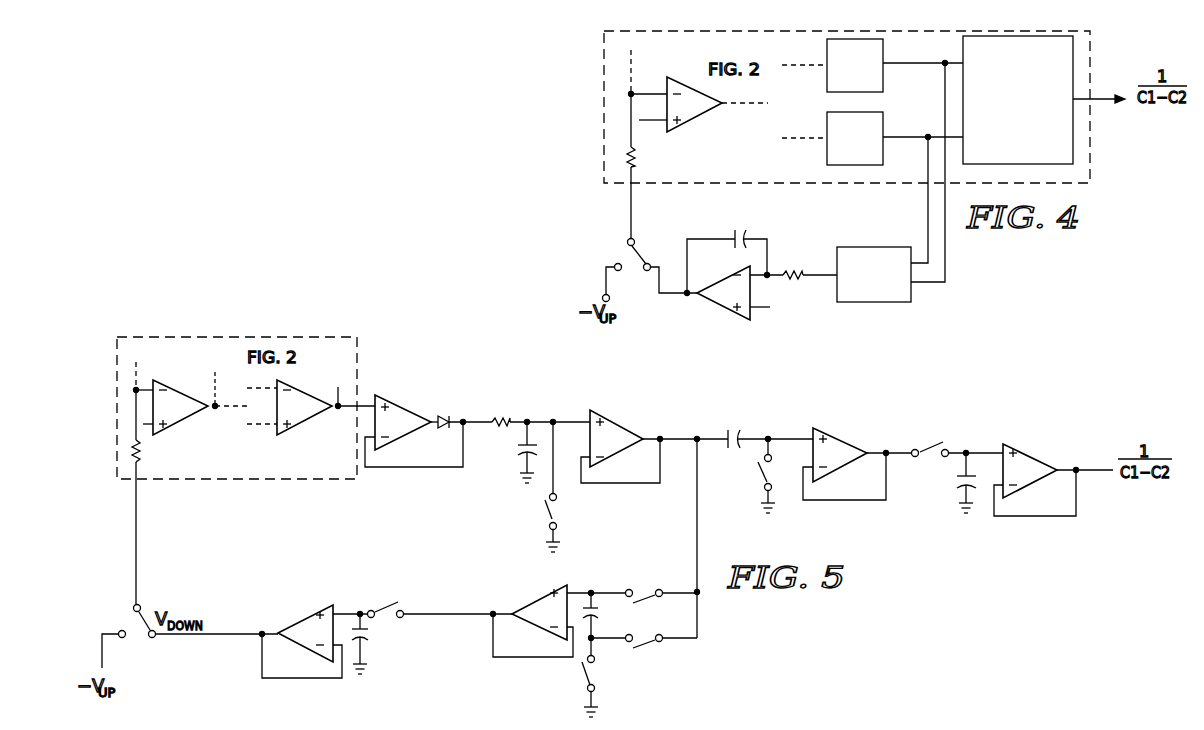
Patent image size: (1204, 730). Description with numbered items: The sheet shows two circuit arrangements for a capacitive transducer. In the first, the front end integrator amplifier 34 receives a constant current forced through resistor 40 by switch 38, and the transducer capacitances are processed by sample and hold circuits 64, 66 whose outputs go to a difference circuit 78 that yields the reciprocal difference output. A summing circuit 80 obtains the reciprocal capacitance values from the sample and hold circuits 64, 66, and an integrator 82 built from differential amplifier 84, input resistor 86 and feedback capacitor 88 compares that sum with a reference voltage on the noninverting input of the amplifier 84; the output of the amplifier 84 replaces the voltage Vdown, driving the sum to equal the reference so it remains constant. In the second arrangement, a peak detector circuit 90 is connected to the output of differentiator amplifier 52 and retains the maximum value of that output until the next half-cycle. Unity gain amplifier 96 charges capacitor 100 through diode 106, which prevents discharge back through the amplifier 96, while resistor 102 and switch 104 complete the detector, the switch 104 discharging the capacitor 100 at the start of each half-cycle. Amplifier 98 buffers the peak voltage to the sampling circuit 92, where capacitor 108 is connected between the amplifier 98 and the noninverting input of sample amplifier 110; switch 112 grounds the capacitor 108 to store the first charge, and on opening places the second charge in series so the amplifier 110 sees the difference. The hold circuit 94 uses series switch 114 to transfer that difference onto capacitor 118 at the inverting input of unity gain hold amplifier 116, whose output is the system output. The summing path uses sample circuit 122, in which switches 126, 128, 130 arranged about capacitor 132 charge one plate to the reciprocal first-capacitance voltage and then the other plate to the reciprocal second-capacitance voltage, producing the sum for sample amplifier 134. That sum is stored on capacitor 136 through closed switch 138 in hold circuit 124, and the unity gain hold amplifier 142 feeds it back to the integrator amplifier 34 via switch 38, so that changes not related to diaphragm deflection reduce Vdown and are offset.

In FIG. 4, the integrator amplifier 34 is at (707, 115).
In FIG. 5, the integrator amplifier 34 is at (183, 394).
In FIG. 4, the switch 38 is at (628, 243).
In FIG. 5, the switch 38 is at (132, 609).
In FIG. 4, the resistor 40 is at (637, 158).
In FIG. 5, the resistor 40 is at (142, 458).
In FIG. 5, the differentiator amplifier 52 is at (293, 428).
In FIG. 4, the sample and hold circuit 64 is at (884, 49).
In FIG. 4, the sample and hold circuit 66 is at (884, 114).
In FIG. 4, the difference circuit 78 is at (1027, 145).
In FIG. 4, the summing circuit 80 is at (876, 247).
In FIG. 4, the integrator 82 is at (748, 269).
In FIG. 4, the differential amplifier 84 is at (720, 312).
In FIG. 4, the input resistor 86 is at (796, 270).
In FIG. 4, the feedback capacitor 88 is at (745, 230).
In FIG. 5, the peak detector circuit 90 is at (485, 461).
In FIG. 5, the sampling circuit 92 is at (844, 445).
In FIG. 5, the hold circuit 94 is at (1034, 461).
In FIG. 5, the unity gain amplifier 96 is at (395, 404).
In FIG. 5, the amplifier 98 is at (623, 428).
In FIG. 5, the capacitor 100 is at (518, 452).
In FIG. 5, the resistor 102 is at (503, 417).
In FIG. 5, the switch 104 is at (557, 512).
In FIG. 5, the diode 106 is at (447, 414).
In FIG. 5, the capacitor 108 is at (735, 423).
In FIG. 5, the sample amplifier 110 is at (840, 440).
In FIG. 5, the switch 112 is at (760, 476).
In FIG. 5, the series switch 114 is at (932, 447).
In FIG. 5, the hold amplifier 116 is at (1033, 459).
In FIG. 5, the capacitor 118 is at (955, 484).
In FIG. 5, the sample circuit 122 is at (548, 608).
In FIG. 5, the hold circuit 124 is at (314, 622).
In FIG. 5, the switch 126 is at (639, 590).
In FIG. 5, the switch 128 is at (647, 648).
In FIG. 5, the switch 130 is at (585, 678).
In FIG. 5, the capacitor 132 is at (603, 614).
In FIG. 5, the sample amplifier 134 is at (540, 599).
In FIG. 5, the capacitor 136 is at (373, 634).
In FIG. 5, the switch 138 is at (387, 602).
In FIG. 5, the hold amplifier 142 is at (292, 627).